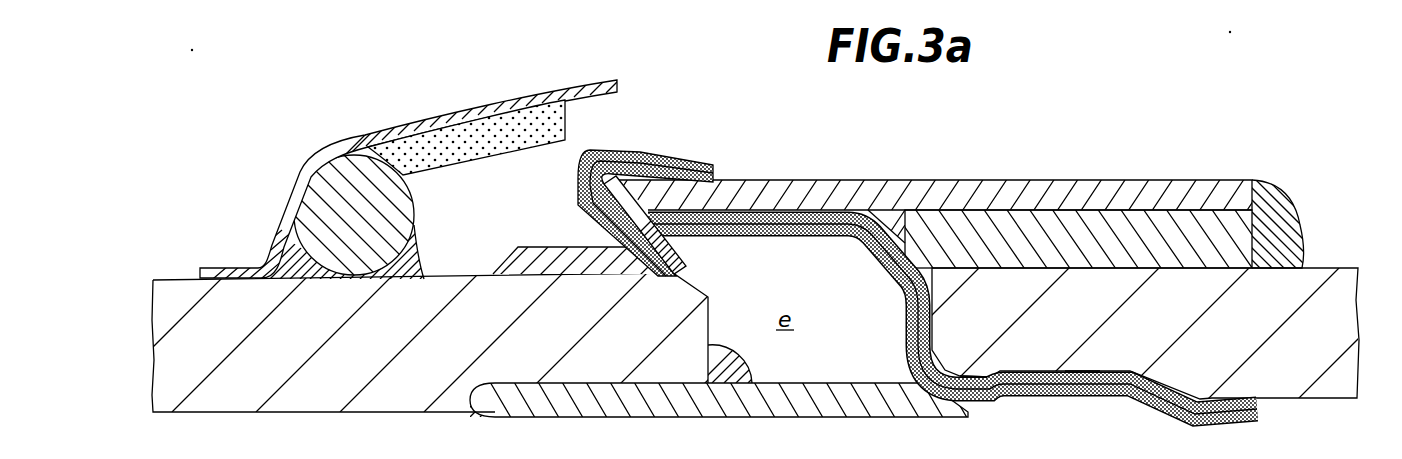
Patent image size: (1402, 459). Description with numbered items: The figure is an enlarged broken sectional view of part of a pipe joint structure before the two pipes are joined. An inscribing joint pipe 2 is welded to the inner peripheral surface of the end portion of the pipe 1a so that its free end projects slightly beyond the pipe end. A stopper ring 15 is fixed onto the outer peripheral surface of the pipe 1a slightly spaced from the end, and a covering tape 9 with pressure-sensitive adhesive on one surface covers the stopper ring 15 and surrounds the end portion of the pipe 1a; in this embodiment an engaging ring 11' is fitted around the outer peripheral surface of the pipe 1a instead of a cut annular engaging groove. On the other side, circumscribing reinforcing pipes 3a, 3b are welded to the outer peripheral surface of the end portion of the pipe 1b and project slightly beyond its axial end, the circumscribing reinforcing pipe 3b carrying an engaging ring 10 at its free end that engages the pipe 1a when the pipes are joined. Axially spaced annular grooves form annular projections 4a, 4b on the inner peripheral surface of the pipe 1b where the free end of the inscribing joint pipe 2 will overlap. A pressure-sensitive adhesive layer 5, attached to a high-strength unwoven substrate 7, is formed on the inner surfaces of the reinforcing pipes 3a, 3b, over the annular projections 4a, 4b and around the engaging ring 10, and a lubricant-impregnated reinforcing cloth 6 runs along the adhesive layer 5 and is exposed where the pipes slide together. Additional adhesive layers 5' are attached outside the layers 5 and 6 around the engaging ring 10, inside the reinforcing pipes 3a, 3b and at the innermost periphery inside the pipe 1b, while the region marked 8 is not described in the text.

The pipe 1a is at (194, 278).
The pipe 1b is at (1325, 267).
The inscribing joint pipe 2 is at (702, 405).
The circumscribing reinforcing pipe 3a is at (1002, 190).
The circumscribing reinforcing pipe 3b is at (1073, 230).
The annular projection 4a is at (980, 364).
The annular projection 4b is at (1060, 369).
The pressure-sensitive adhesive layer 5 is at (896, 260).
The additional adhesive layer 5' is at (955, 285).
The reinforcing cloth 6 is at (580, 178).
The substrate 7 is at (808, 211).
The filler body 8 is at (466, 136).
The covering tape 9 is at (527, 96).
The engaging ring 10 is at (690, 255).
The engaging ring 11' is at (584, 238).
The stopper ring 15 is at (322, 182).